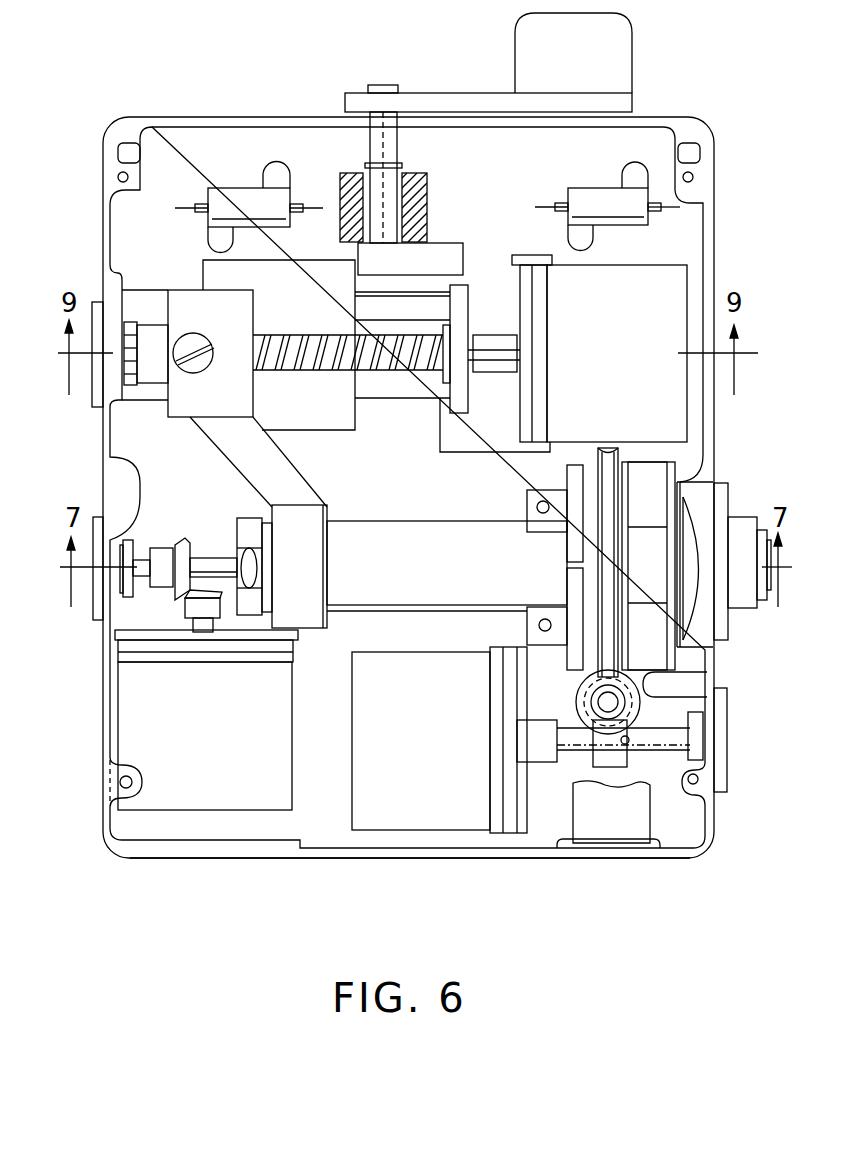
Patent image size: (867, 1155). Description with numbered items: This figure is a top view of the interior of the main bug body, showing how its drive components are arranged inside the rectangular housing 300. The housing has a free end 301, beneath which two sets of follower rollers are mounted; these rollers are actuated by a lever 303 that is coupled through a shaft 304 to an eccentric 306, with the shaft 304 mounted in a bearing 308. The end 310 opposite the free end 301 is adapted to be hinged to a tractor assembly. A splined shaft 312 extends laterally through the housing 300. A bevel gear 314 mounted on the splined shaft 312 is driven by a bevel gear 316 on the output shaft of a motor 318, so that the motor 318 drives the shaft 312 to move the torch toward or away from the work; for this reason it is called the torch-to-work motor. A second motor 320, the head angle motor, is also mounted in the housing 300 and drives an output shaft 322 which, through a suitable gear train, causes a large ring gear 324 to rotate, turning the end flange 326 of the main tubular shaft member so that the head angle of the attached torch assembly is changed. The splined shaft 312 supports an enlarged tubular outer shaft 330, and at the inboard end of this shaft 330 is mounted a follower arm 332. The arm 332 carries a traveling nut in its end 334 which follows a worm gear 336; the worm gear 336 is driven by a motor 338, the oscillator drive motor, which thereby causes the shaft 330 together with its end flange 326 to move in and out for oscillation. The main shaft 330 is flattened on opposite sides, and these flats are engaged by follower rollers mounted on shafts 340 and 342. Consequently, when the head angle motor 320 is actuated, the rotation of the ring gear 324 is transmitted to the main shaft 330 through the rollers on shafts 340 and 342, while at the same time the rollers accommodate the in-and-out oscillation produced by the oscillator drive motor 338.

The rectangular housing 300 is at (110, 474).
The free end 301 is at (202, 121).
The lever 303 is at (518, 48).
The shaft 304 is at (388, 147).
The eccentric 306 is at (440, 253).
The bearing 308 is at (428, 190).
The end opposite the free end 310 is at (215, 848).
The splined shaft 312 is at (215, 560).
The bevel gear 314 is at (160, 550).
The bevel gear 316 is at (192, 606).
The torch-to-work motor 318 is at (228, 708).
The head angle motor 320 is at (447, 710).
The output shaft 322 is at (587, 748).
The large ring gear 324 is at (603, 472).
The end flange of main tubular shaft member 326 is at (747, 523).
The tubular outer shaft 330 is at (441, 508).
The follower arm 332 is at (315, 481).
The end of follower arm 334 is at (232, 308).
The worm gear 336 is at (332, 383).
The oscillator drive motor 338 is at (638, 313).
The follower roller shaft 340 is at (541, 512).
The follower roller shaft 342 is at (544, 617).